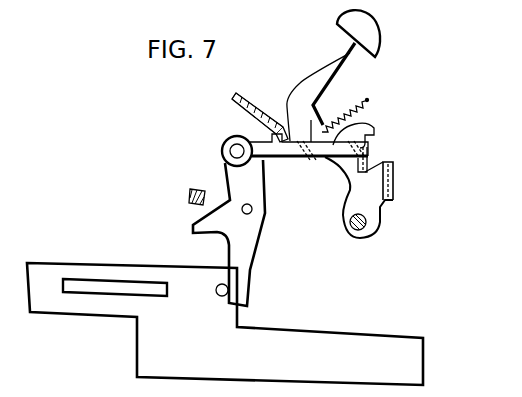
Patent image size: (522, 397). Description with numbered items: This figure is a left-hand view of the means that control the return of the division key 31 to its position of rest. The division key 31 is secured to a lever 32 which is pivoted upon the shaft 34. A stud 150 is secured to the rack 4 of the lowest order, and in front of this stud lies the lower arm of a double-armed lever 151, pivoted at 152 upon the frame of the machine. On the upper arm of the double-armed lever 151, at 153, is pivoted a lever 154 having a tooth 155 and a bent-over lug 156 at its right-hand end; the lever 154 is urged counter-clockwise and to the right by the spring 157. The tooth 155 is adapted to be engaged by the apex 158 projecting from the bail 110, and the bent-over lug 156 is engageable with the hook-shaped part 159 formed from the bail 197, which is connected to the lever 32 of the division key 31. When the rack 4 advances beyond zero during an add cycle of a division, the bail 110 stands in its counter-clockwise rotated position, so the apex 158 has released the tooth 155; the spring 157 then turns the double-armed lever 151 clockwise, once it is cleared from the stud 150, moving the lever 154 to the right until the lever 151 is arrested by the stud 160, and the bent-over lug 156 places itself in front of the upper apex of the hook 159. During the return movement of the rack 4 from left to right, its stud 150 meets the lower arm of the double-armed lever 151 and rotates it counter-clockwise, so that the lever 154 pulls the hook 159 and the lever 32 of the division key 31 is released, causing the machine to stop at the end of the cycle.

The rack 4 is at (278, 348).
The division key 31 is at (376, 36).
The lever 32 is at (345, 57).
The shaft 34 is at (367, 226).
The bail 110 is at (254, 100).
The stud 150 is at (218, 285).
The double-armed lever 151 is at (242, 248).
The pivot 152 is at (252, 212).
The pivot 153 is at (234, 151).
The lever 154 is at (299, 150).
The tooth 155 is at (275, 142).
The bent-over lug 156 is at (368, 153).
The spring 157 is at (364, 100).
The apex 158 is at (270, 128).
The hook-shaped part 159 is at (375, 131).
The stud 160 is at (188, 197).
The bail 197 is at (394, 188).